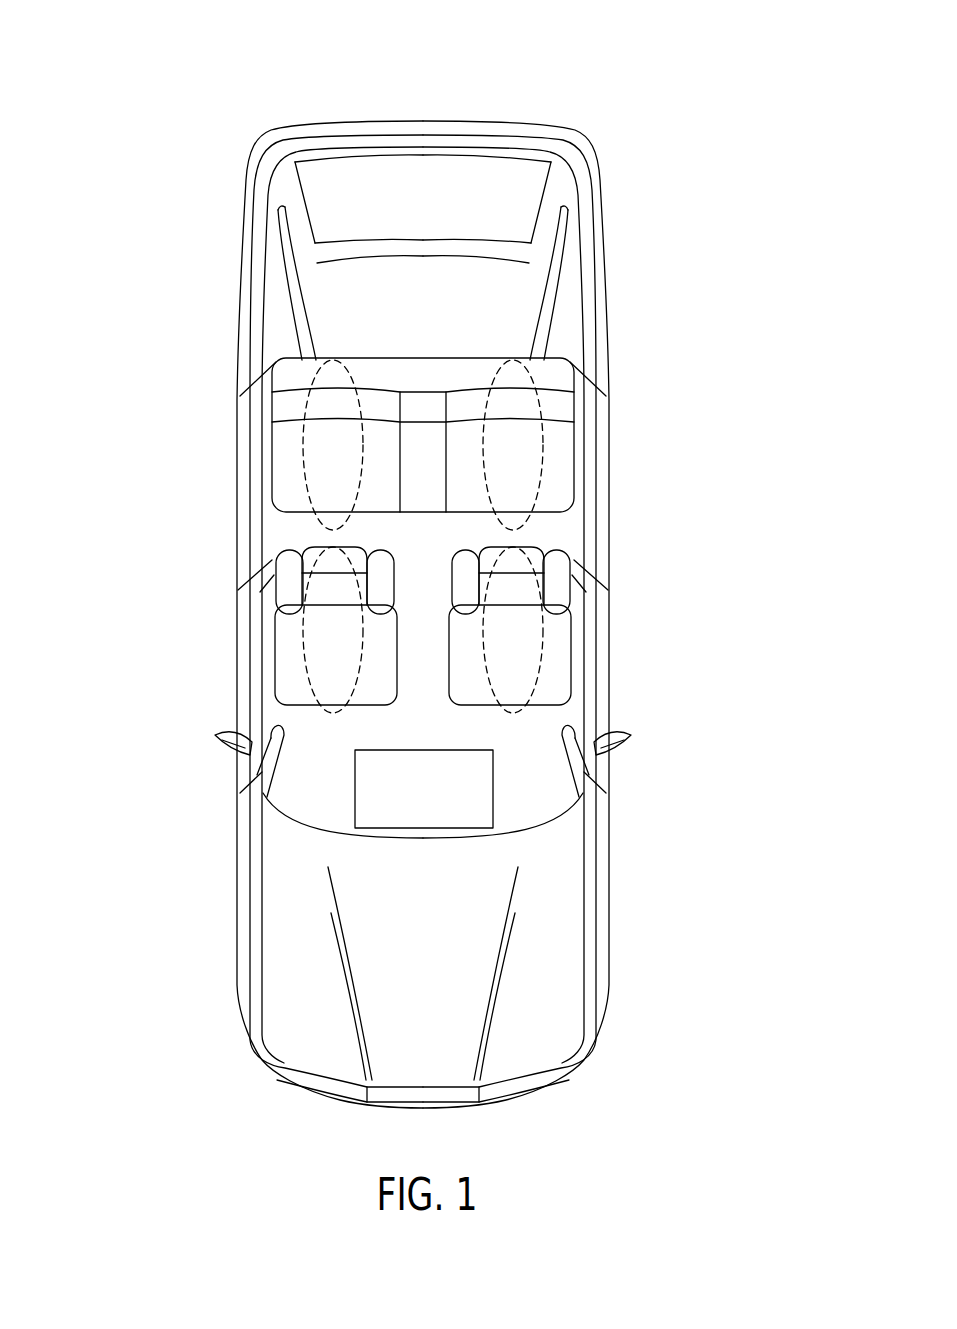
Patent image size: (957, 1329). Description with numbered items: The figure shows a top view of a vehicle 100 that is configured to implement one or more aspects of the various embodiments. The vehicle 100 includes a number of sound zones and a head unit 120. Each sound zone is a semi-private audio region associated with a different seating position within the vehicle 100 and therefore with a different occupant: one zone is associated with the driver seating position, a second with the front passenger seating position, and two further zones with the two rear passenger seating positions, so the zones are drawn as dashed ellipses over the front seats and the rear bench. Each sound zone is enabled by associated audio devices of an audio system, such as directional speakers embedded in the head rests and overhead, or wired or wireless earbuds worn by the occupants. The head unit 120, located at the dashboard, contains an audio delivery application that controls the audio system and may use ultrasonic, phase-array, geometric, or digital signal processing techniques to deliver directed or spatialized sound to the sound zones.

The vehicle 100 is at (602, 50).
The head unit 120 is at (408, 814).